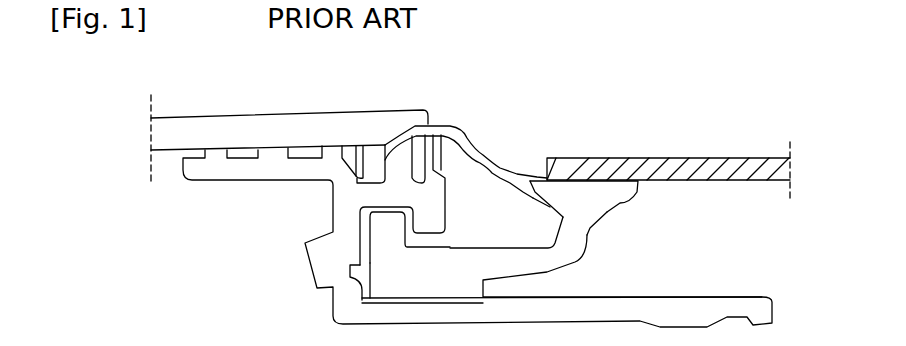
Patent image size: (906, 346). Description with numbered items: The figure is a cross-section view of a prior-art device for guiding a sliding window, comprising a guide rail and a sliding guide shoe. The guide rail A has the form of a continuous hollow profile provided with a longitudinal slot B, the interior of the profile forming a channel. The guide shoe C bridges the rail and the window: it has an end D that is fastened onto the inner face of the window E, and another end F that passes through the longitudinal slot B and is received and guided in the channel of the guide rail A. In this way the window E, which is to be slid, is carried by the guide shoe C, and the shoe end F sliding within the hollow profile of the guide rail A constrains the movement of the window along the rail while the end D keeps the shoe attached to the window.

The guide rail A is at (350, 218).
The longitudinal slot B is at (413, 241).
The guide shoe C is at (600, 213).
The end of guide shoe D is at (590, 192).
The window E is at (718, 170).
The other end of guide shoe F is at (392, 225).